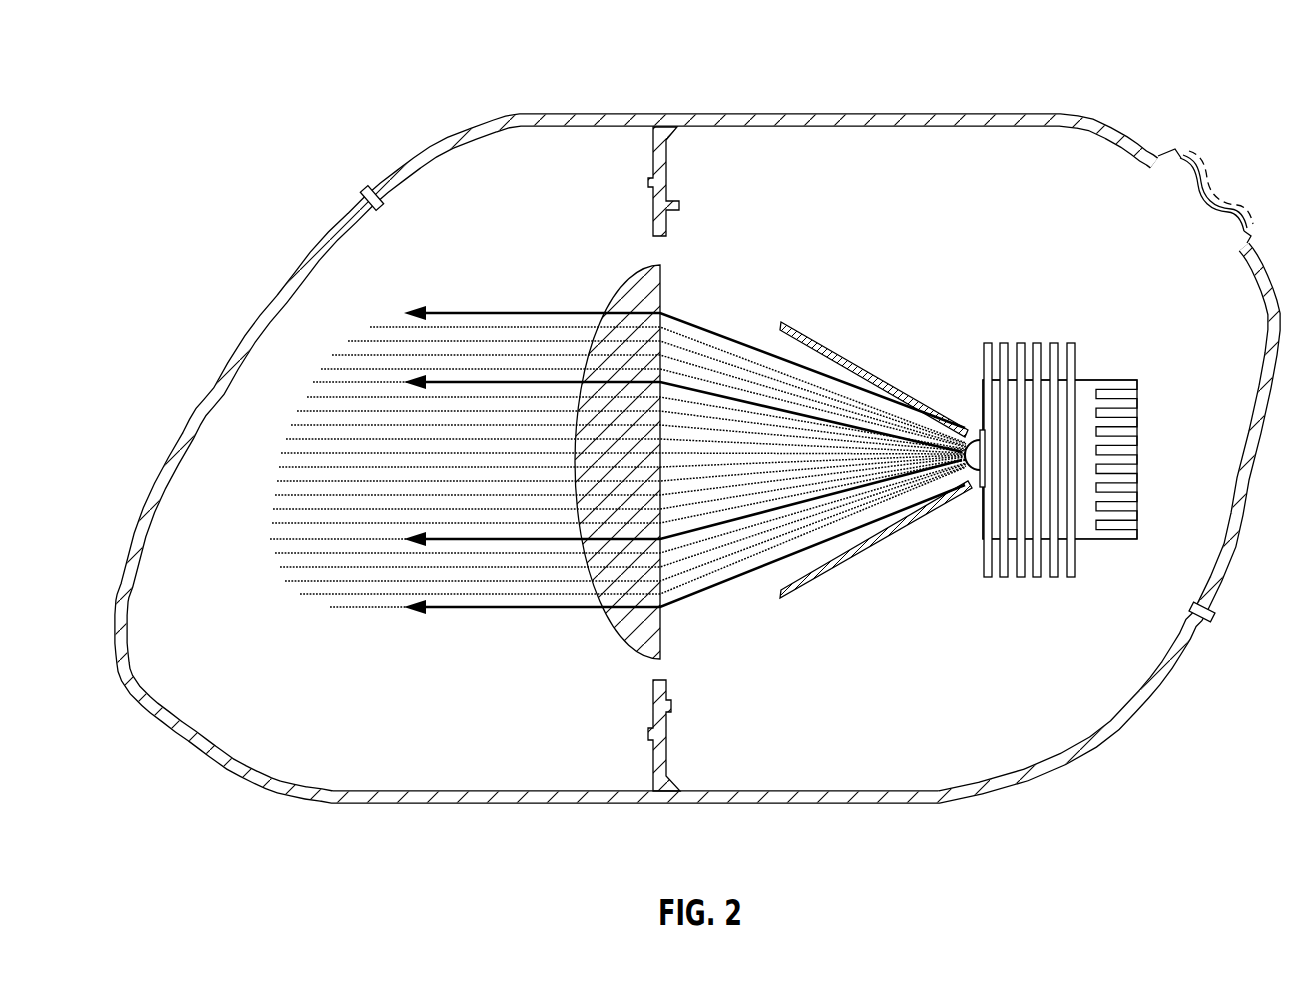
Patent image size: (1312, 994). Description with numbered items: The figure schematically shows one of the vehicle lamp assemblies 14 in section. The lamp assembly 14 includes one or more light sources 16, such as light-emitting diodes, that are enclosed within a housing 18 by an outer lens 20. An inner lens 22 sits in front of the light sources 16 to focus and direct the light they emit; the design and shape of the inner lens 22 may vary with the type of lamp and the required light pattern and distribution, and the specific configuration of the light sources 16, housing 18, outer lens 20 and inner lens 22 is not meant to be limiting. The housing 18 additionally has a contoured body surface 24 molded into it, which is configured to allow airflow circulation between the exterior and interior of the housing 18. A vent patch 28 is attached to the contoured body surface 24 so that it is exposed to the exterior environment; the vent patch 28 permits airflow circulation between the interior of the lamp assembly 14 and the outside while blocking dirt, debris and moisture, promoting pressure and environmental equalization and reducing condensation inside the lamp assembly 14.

The lamp assembly 14 is at (163, 47).
The light source 16 is at (973, 432).
The housing 18 is at (850, 113).
The outer lens 20 is at (486, 116).
The inner lens 22 is at (625, 635).
The contoured body surface 24 is at (1197, 172).
The vent patch 28 is at (1238, 203).